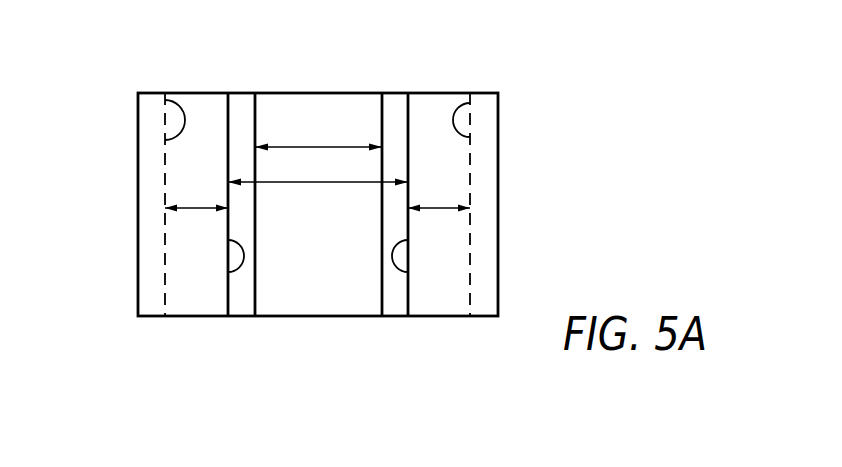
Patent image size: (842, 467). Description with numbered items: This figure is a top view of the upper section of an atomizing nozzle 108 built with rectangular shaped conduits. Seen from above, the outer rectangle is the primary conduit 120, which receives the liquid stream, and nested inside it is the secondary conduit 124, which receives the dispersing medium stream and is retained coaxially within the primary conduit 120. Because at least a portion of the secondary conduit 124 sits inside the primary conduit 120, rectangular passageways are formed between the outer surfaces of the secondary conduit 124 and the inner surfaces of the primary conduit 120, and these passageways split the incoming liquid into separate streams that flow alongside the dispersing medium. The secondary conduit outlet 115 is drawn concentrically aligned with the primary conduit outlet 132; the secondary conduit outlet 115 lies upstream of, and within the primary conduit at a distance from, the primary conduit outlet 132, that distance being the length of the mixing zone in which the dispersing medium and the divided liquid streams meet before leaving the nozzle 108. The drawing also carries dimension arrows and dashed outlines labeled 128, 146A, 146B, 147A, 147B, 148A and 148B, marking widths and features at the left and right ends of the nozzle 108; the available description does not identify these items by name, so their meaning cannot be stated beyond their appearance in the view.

The atomizing nozzle 108 is at (582, 34).
The secondary conduit outlet 115 is at (318, 147).
The primary conduit 120 is at (208, 93).
The secondary conduit 124 is at (253, 290).
The overall width 128 is at (231, 103).
The primary conduit outlet 132 is at (322, 182).
The first hole 146A is at (165, 140).
The second hole 146B is at (472, 140).
The first spacing 147A is at (200, 211).
The second spacing 147B is at (442, 210).
The first slot 148A is at (228, 270).
The second slot 148B is at (404, 270).